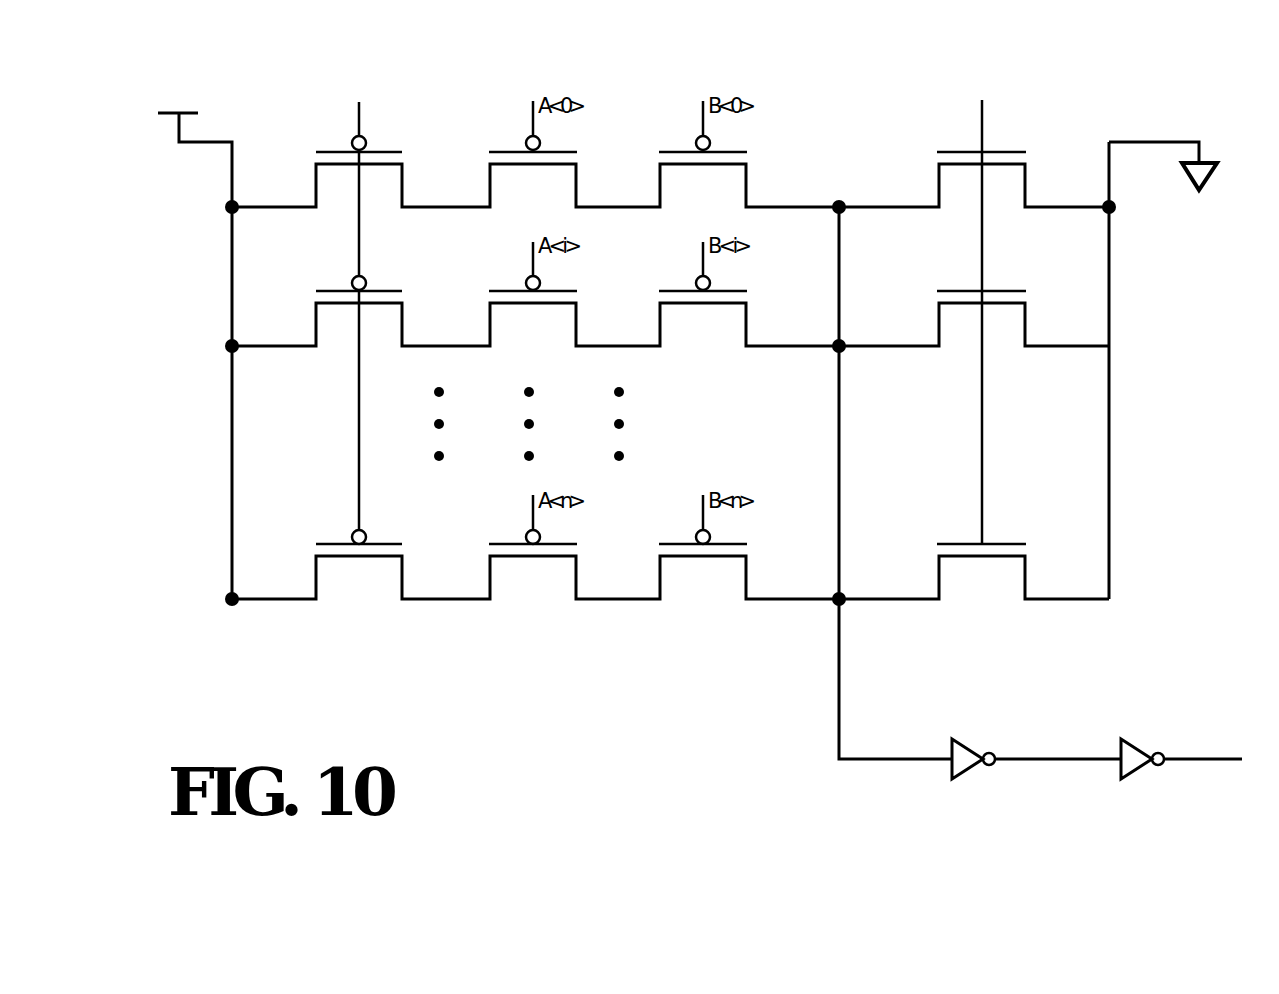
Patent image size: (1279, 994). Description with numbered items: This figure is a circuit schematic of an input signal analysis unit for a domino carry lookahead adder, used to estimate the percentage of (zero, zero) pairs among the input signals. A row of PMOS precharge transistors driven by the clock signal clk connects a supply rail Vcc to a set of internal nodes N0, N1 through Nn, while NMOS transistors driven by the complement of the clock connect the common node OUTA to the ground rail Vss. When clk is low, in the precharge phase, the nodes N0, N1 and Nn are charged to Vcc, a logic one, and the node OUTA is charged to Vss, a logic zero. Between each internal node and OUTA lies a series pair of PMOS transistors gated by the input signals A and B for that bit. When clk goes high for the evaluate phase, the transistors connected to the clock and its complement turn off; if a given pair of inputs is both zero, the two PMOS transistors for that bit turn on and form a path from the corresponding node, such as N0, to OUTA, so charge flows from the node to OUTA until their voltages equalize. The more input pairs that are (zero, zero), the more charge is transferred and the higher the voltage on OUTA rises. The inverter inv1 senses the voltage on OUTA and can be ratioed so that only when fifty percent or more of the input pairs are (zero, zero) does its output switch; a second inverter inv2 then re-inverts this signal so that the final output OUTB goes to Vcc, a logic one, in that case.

The supply voltage Vcc is at (195, 339).
The ground voltage Vss is at (1182, 370).
The node N0 is at (670, 185).
The node N1 is at (670, 324).
The node Nn is at (670, 578).
The node OUTA is at (895, 468).
The output OUTB is at (1203, 747).
The clock signal clk is at (359, 319).
The first inverter inv1 is at (976, 749).
The second inverter inv2 is at (1140, 732).